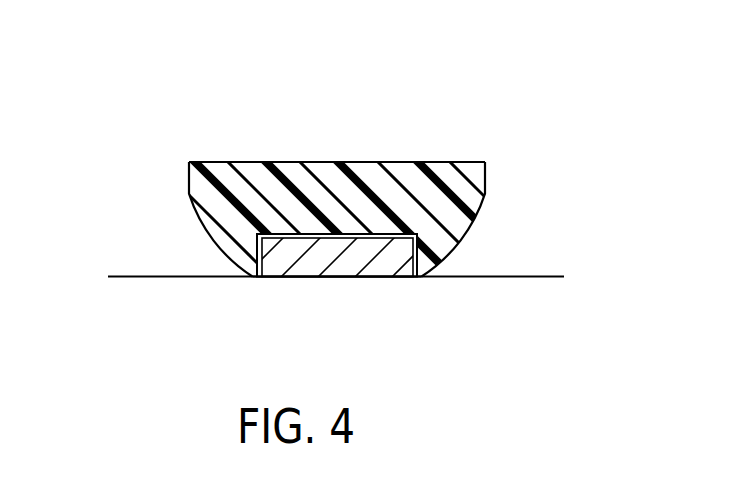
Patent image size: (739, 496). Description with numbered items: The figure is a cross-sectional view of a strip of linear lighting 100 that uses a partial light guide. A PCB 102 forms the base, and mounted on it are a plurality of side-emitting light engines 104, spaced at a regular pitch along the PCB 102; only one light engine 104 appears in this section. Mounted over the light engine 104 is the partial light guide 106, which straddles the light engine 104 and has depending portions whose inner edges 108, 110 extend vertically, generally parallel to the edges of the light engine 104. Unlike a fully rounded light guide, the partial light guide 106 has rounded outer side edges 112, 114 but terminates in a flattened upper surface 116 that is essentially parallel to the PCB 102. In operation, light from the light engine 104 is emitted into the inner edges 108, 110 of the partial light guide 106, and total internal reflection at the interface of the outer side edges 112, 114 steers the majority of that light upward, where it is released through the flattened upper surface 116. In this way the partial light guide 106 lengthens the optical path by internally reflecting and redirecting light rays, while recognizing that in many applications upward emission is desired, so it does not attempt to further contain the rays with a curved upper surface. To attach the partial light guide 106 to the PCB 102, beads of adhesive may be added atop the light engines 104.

The strip of linear lighting 100 is at (351, 198).
The PCB 102 is at (543, 276).
The side-emitting light engines 104 is at (341, 269).
The partial light guide 106 is at (362, 168).
The inner edge of depending portion 108 is at (258, 257).
The inner edge of depending portion 110 is at (423, 258).
The rounded outer side edge 112 is at (189, 197).
The rounded outer side edge 114 is at (482, 212).
The top surface of encapsulant 116 is at (287, 161).